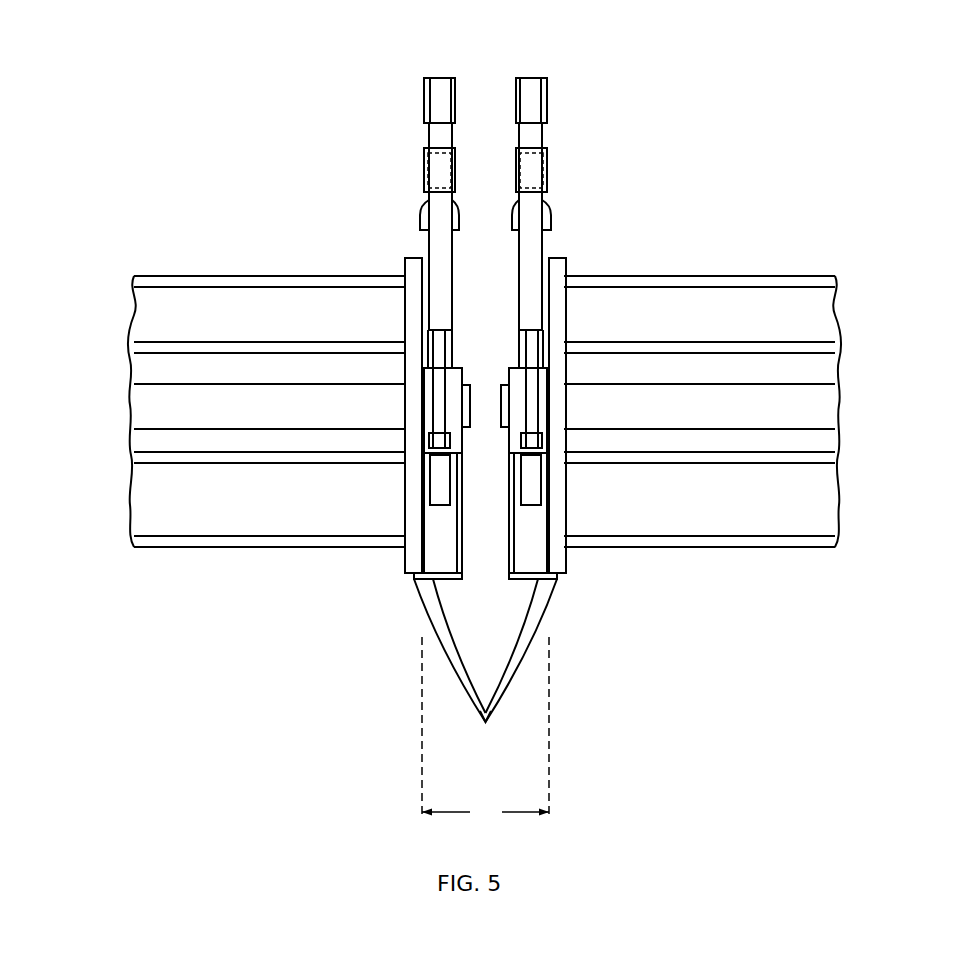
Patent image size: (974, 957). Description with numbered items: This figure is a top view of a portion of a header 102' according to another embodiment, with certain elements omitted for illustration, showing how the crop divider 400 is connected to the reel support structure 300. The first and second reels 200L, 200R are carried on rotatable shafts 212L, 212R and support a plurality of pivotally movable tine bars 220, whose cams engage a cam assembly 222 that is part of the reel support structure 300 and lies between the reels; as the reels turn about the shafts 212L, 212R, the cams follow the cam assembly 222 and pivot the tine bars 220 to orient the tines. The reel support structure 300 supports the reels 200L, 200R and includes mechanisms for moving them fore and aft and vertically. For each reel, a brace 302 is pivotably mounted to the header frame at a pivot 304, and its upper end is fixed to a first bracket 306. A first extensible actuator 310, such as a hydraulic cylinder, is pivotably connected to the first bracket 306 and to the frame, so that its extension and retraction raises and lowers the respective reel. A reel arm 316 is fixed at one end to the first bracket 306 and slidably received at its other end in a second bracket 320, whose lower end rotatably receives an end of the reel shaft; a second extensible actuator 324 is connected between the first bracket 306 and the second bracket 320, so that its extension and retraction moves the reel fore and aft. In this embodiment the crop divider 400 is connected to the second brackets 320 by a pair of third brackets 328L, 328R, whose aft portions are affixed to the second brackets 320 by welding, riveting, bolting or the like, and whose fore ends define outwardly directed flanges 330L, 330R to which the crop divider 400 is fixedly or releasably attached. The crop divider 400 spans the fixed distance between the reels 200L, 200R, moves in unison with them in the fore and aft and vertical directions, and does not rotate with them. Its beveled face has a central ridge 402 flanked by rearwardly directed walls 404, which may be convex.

The header 102' is at (493, 419).
The first reel 200L is at (222, 262).
The second reel 200R is at (748, 264).
The shaft 212L is at (211, 406).
The shaft 212R is at (767, 406).
The tine bar 220 is at (487, 411).
The cam assembly 222 is at (491, 412).
The reel support structure 300 is at (485, 90).
The brace 302 is at (486, 219).
The pivot 304 is at (486, 75).
The first bracket 306 is at (488, 167).
The first extensible actuator 310 is at (490, 201).
The reel arm 316 is at (490, 519).
The second bracket 320 is at (452, 377).
The second extensible actuator 324 is at (487, 336).
The third bracket 328L is at (435, 582).
The third bracket 328R is at (536, 582).
The flange 330L is at (462, 555).
The flange 330R is at (509, 555).
The crop divider 400 is at (487, 702).
The central ridge 402 is at (485, 722).
The wall 404 is at (452, 683).